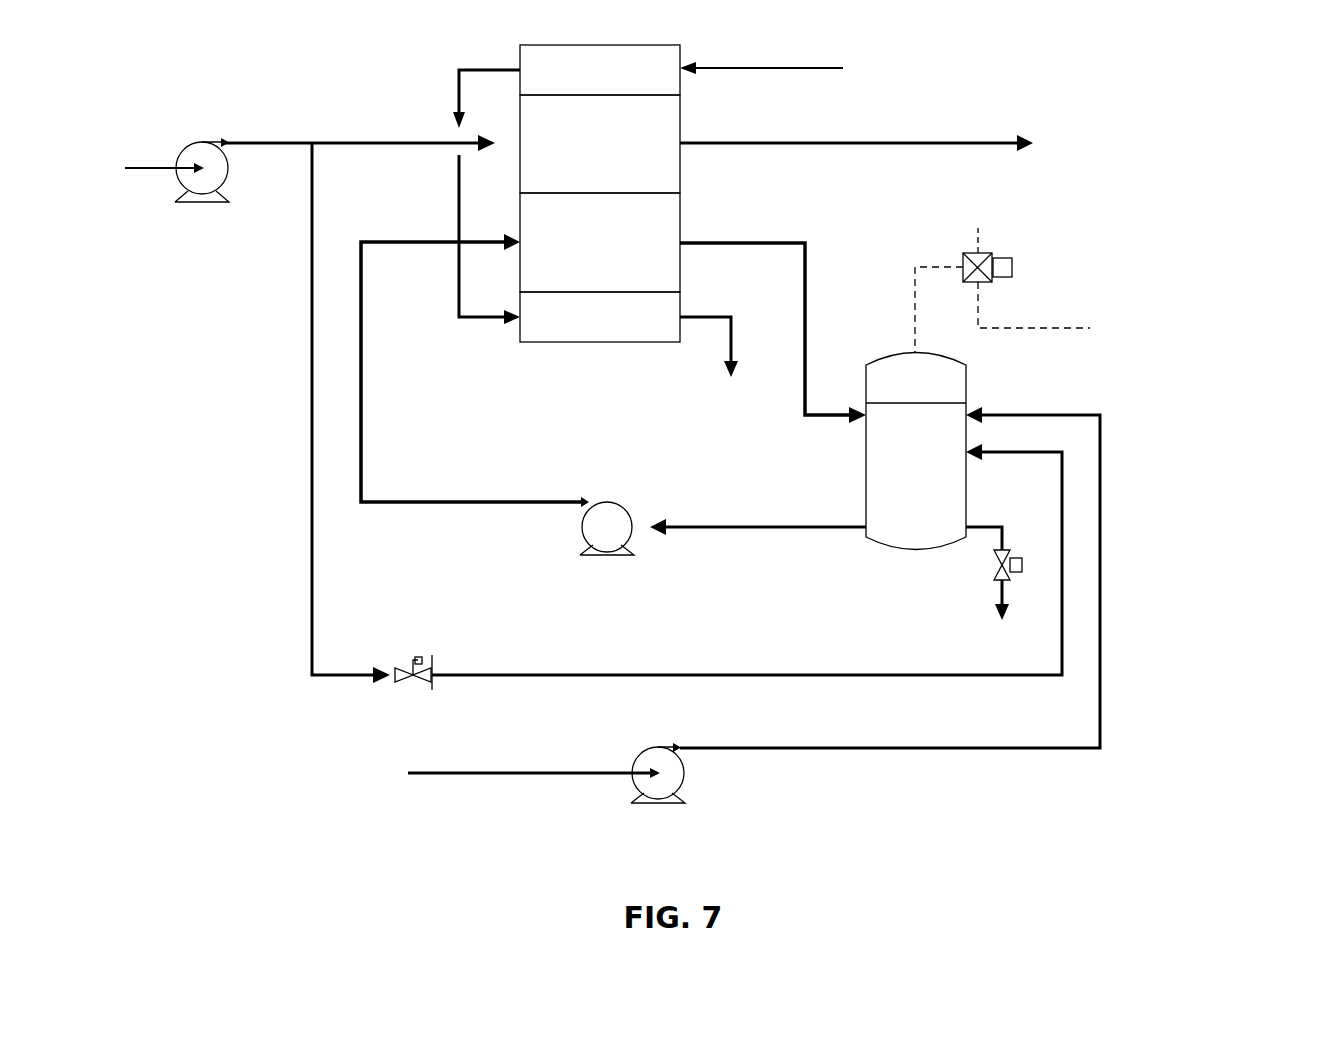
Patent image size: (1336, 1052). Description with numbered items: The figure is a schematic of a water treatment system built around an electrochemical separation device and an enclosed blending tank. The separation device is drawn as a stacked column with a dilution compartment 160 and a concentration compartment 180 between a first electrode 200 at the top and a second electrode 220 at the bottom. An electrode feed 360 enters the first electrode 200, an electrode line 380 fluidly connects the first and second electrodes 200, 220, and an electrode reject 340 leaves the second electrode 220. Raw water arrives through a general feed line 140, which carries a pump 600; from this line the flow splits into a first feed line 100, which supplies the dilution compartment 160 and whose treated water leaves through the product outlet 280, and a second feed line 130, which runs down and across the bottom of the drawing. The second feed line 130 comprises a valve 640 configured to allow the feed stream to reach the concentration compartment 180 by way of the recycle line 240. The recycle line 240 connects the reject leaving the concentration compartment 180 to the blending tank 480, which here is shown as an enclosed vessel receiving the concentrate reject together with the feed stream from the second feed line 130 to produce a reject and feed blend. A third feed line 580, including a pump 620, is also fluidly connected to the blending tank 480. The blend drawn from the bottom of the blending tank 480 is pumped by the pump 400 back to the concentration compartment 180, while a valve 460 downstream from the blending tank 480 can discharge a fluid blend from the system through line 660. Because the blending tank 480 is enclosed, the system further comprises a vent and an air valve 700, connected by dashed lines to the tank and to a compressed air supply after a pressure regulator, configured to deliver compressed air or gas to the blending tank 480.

The first feed line 100 is at (358, 135).
The second feed line 130 is at (310, 400).
The general feed line 140 is at (132, 168).
The dilution compartment 160 is at (600, 144).
The concentration compartment 180 is at (600, 242).
The first electrode 200 is at (600, 70).
The second electrode 220 is at (600, 317).
The recycle line 240 is at (777, 240).
The product outlet 280 is at (887, 147).
The electrode reject 340 is at (714, 366).
The electrode feed 360 is at (788, 68).
The electrode line 380 is at (487, 68).
The pump 400 is at (615, 503).
The valve 460 is at (995, 565).
The blending tank 480 is at (916, 451).
The third feed line 580 is at (503, 768).
The pump 600 is at (197, 199).
The pump 620 is at (668, 801).
The valve 640 is at (413, 678).
The discharge line 660 is at (1000, 617).
The air valve 700 is at (1012, 266).